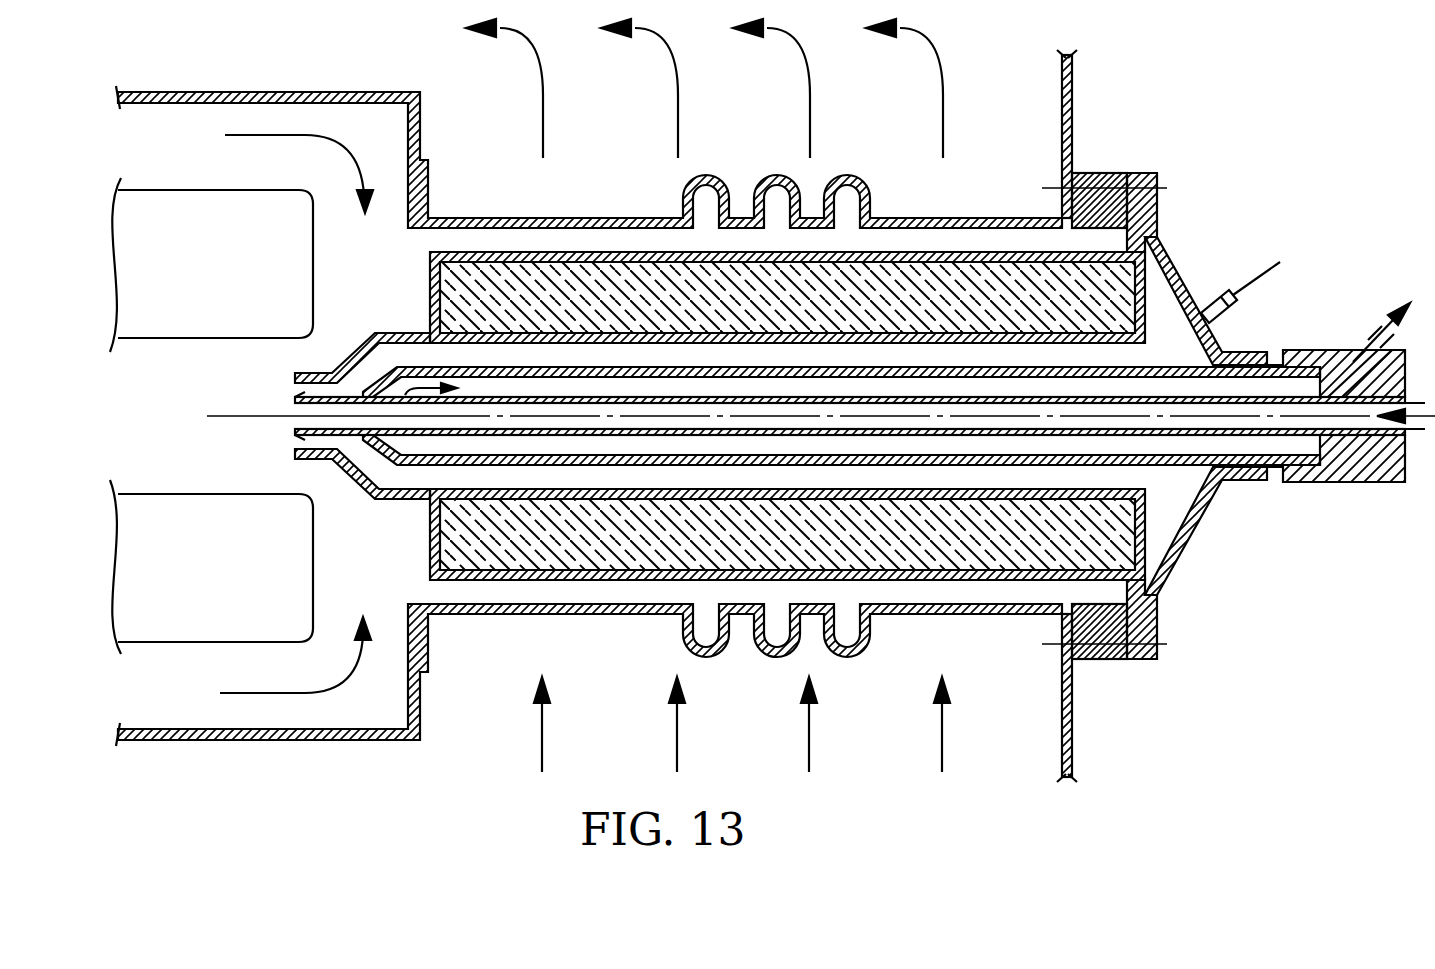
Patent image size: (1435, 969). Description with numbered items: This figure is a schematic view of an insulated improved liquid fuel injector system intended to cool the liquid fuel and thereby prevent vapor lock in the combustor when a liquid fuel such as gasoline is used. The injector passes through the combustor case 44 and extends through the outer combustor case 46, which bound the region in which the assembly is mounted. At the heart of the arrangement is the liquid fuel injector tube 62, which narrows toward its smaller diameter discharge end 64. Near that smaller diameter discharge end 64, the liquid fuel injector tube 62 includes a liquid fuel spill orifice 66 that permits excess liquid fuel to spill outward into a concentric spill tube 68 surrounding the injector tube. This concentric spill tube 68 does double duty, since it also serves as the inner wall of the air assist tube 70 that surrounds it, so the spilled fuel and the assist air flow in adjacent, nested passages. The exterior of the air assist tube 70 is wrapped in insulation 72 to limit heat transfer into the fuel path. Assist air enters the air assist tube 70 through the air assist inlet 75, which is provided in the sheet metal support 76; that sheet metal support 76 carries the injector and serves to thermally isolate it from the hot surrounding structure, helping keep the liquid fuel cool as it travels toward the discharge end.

The combustor case 44 is at (1072, 105).
The outer combustor case 46 is at (420, 132).
The liquid fuel injector tube 62 is at (1291, 395).
The smaller diameter discharge end 64 is at (300, 400).
The liquid fuel spill orifice 66 is at (420, 437).
The concentric spill tube 68 is at (1200, 477).
The air assist tube 70 is at (1112, 489).
The insulation 72 is at (527, 570).
The air assist inlet 75 is at (1217, 287).
The sheet metal support 76 is at (1170, 253).